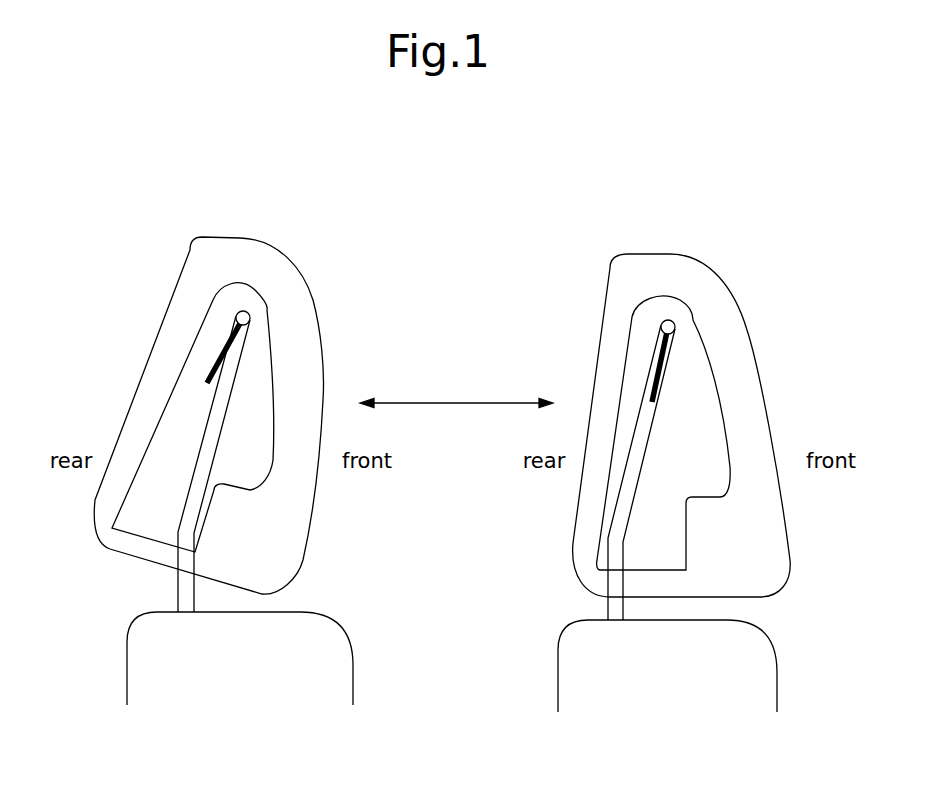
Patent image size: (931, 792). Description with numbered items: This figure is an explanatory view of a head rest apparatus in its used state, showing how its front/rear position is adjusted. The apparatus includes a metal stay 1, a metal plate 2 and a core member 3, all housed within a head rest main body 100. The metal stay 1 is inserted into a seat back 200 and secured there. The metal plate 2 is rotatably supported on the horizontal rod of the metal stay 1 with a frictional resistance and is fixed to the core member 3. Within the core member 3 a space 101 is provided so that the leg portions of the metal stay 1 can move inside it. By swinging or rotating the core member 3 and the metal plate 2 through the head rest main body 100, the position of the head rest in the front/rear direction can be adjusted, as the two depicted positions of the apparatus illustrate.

The metal stay 1 is at (192, 512).
The metal plate 2 is at (223, 363).
The core member 3 is at (227, 283).
The head rest main body 100 is at (253, 253).
The space 101 is at (158, 459).
The seat back 200 is at (333, 630).